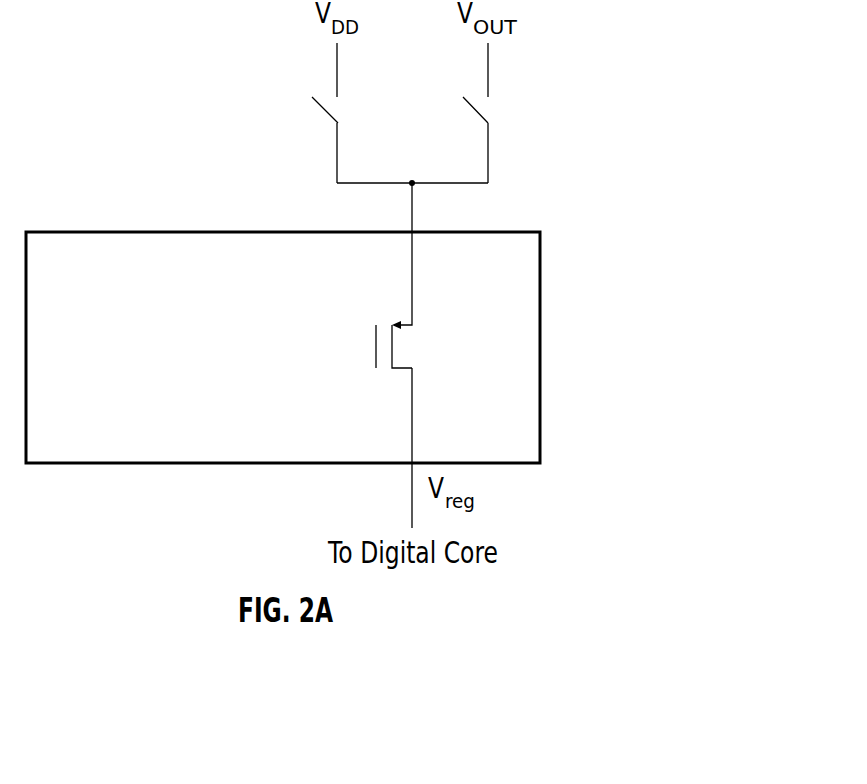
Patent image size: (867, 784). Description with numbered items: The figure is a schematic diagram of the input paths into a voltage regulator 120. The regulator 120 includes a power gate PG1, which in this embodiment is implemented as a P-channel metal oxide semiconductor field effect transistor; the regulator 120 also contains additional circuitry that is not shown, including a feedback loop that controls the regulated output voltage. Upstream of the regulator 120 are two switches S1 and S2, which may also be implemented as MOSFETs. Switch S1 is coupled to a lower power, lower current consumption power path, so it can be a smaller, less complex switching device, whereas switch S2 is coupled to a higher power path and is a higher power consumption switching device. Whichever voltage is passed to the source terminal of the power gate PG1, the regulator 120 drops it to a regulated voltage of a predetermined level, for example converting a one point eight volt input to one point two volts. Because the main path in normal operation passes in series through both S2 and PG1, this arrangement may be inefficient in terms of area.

The voltage regulator 120 is at (87, 230).
The switch S1 is at (305, 113).
The switch S2 is at (456, 113).
The power gate PG1 is at (376, 348).